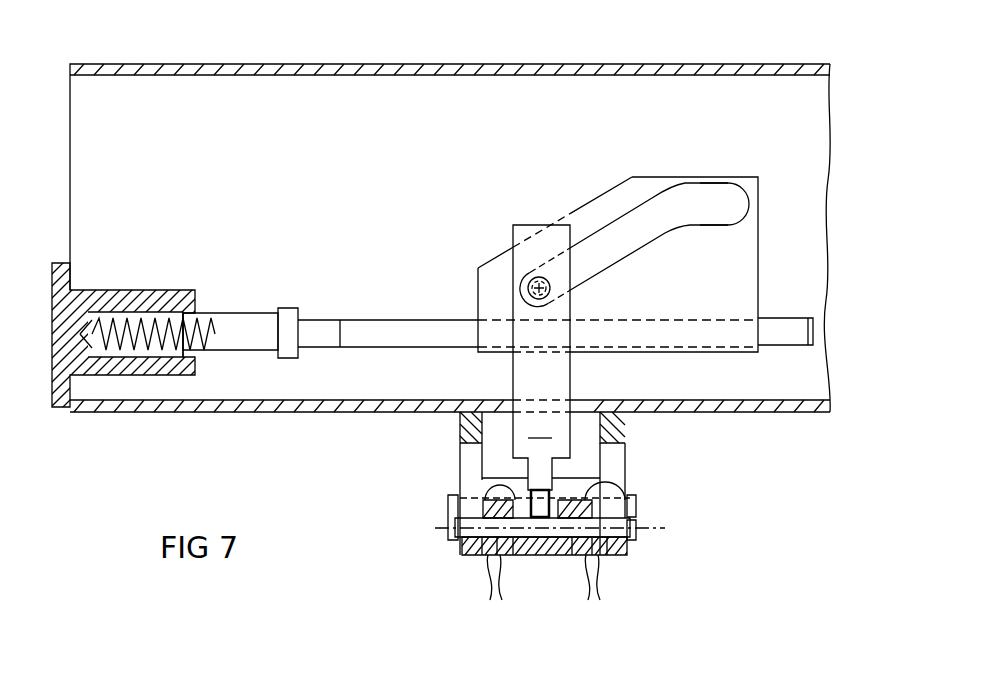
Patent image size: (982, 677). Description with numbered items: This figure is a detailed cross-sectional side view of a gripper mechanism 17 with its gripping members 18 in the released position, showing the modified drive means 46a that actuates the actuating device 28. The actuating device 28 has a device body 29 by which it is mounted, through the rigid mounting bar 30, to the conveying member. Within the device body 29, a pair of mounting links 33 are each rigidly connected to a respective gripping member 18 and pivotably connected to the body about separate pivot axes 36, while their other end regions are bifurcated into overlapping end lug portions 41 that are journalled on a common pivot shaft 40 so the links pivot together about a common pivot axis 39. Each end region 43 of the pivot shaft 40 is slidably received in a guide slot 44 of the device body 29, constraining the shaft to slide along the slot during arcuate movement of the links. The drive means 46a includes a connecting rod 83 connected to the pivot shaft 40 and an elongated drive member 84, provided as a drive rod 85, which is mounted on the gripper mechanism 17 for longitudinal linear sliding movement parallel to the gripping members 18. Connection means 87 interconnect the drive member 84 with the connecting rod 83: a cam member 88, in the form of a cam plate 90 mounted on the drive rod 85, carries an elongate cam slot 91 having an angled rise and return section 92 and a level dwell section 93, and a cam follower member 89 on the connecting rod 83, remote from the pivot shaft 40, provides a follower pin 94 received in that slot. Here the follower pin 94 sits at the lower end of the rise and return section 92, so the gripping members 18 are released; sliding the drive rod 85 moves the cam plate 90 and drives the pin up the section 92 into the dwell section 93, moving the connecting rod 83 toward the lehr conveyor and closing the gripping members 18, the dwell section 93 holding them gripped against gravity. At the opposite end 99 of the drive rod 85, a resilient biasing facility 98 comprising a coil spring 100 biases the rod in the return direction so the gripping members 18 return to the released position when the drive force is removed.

The mounting bar 30 is at (297, 104).
The drive means 46a is at (783, 133).
The gripper mechanism 17 is at (758, 450).
The resilient biasing facility 98 is at (106, 258).
The coil spring 100 is at (142, 345).
The opposite end 99 is at (254, 322).
The drive member 84 is at (373, 293).
The drive rod 85 is at (792, 332).
The cam plate 90 is at (733, 240).
The connection means 87 is at (799, 283).
The cam member 88 is at (772, 299).
The connecting rod 83 is at (553, 375).
The cam slot 91 is at (620, 206).
The dwell section 93 is at (686, 198).
The rise and return section 92 is at (608, 251).
The follower pin 94 is at (527, 288).
The cam follower member 89 is at (569, 295).
The device body 29 is at (623, 432).
The guide slot 44 is at (470, 460).
The mounting link 33 is at (490, 486).
The end region of pivot shaft 43 is at (460, 532).
The pivot shaft 40 is at (540, 535).
The actuating device 28 is at (703, 515).
The separate pivot axis 36 is at (636, 529).
The common pivot axis 39 is at (635, 534).
The gripping member 18 is at (457, 572).
The end lug portion 41 is at (531, 589).